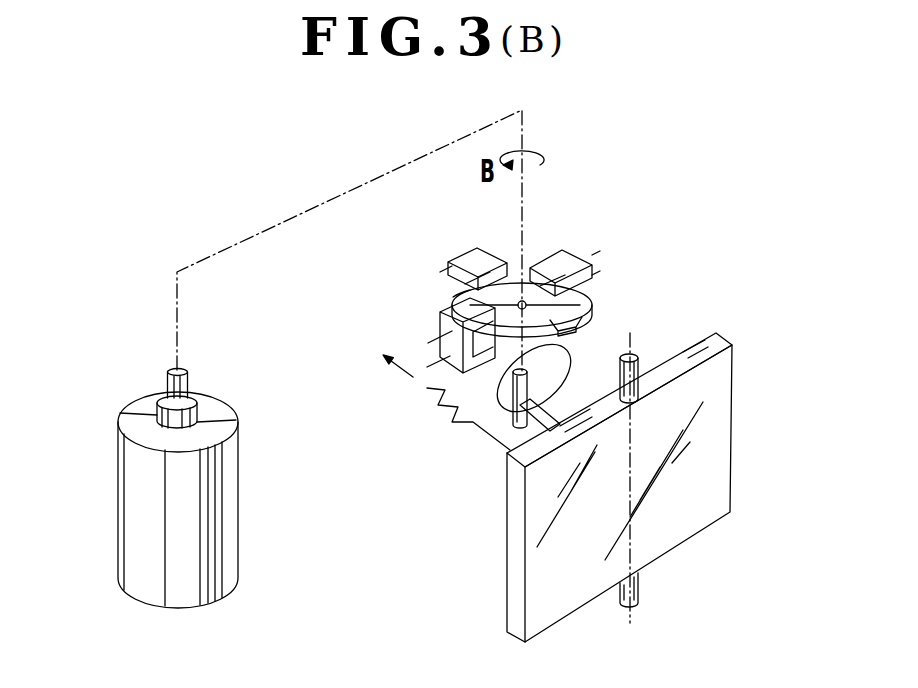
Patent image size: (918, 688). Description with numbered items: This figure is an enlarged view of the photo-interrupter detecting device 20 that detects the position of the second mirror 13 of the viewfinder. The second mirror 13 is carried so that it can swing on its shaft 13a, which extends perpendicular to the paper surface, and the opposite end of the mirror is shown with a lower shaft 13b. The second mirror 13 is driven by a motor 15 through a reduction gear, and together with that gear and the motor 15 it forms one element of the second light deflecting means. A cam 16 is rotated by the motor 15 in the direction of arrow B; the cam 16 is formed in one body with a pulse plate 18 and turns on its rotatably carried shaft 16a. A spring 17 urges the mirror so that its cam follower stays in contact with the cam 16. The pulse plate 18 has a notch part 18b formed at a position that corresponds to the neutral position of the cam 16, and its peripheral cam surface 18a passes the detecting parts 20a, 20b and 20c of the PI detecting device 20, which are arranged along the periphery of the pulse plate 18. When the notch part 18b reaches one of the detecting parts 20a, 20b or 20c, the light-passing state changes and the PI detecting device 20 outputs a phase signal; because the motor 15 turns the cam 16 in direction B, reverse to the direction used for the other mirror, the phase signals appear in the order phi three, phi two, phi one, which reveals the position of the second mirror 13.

The second mirror 13 is at (636, 464).
The shaft 13a is at (634, 356).
The lower shaft of mirror 13b is at (497, 445).
The motor 15 is at (117, 495).
The cam 16 is at (495, 419).
The shaft 16a is at (503, 420).
The spring 17 is at (442, 413).
The pulse plate 18 is at (524, 283).
The cam surface 18a is at (453, 297).
The notch part 18b is at (558, 330).
The PI detecting device 20 is at (459, 269).
The photo-interrupter 20a is at (560, 250).
The photo-interrupter 20b is at (477, 248).
The photo-interrupter 20c is at (416, 330).